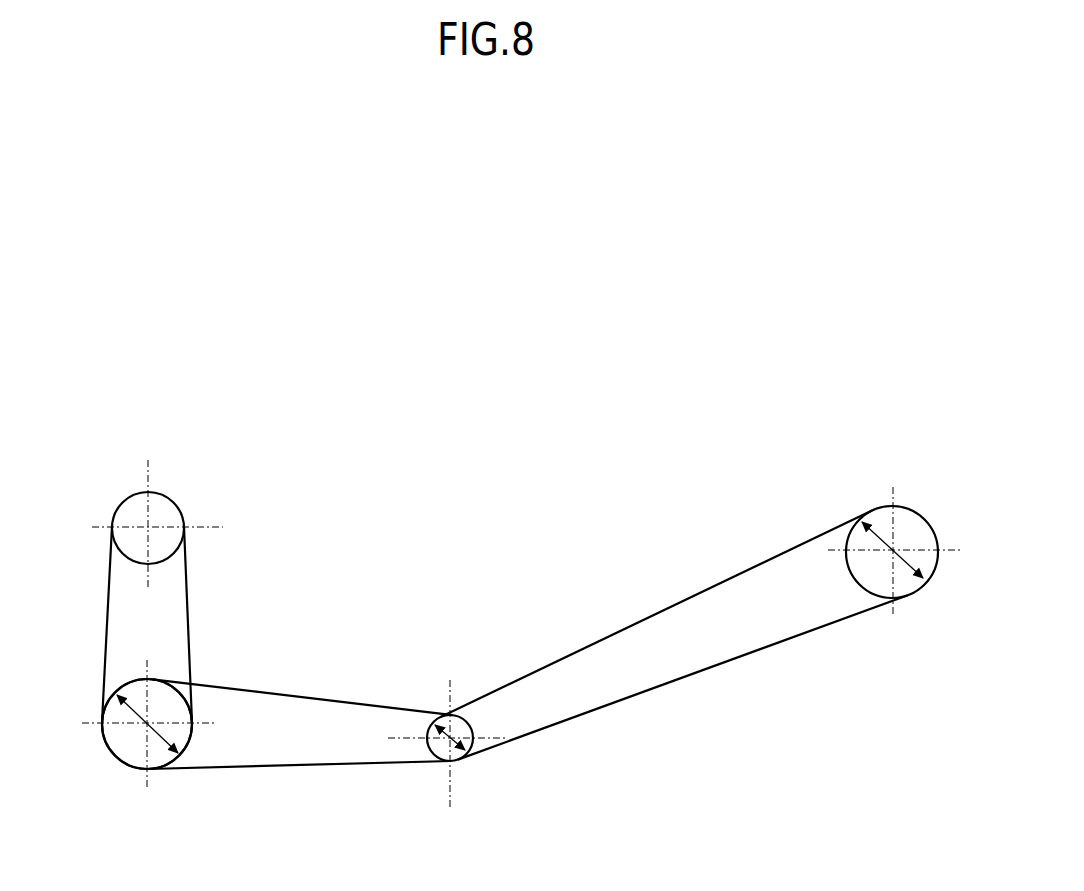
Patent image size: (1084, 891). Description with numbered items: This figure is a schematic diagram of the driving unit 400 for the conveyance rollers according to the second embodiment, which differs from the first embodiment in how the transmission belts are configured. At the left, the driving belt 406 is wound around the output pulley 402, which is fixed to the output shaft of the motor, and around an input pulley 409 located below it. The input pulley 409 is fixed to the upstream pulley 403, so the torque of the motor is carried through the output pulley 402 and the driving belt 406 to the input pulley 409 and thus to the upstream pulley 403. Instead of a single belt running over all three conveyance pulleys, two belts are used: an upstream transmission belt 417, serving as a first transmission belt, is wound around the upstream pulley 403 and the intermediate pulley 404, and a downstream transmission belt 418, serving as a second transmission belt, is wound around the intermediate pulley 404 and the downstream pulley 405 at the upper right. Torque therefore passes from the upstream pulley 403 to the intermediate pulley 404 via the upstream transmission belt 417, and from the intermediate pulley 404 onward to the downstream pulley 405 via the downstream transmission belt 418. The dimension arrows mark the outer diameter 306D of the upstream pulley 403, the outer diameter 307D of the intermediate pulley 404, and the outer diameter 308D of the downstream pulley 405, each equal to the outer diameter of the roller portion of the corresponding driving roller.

The driving unit 400 is at (452, 438).
The output pulley 402 is at (154, 512).
The upstream pulley 403 is at (113, 738).
The input pulley 409 is at (113, 738).
The intermediate pulley 404 is at (440, 747).
The downstream pulley 405 is at (882, 520).
The driving belt 406 is at (189, 607).
The upstream transmission belt 417 is at (325, 697).
The downstream transmission belt 418 is at (590, 642).
The outer diameter 306D is at (163, 768).
The outer diameter 307D is at (470, 722).
The outer diameter 308D is at (870, 535).